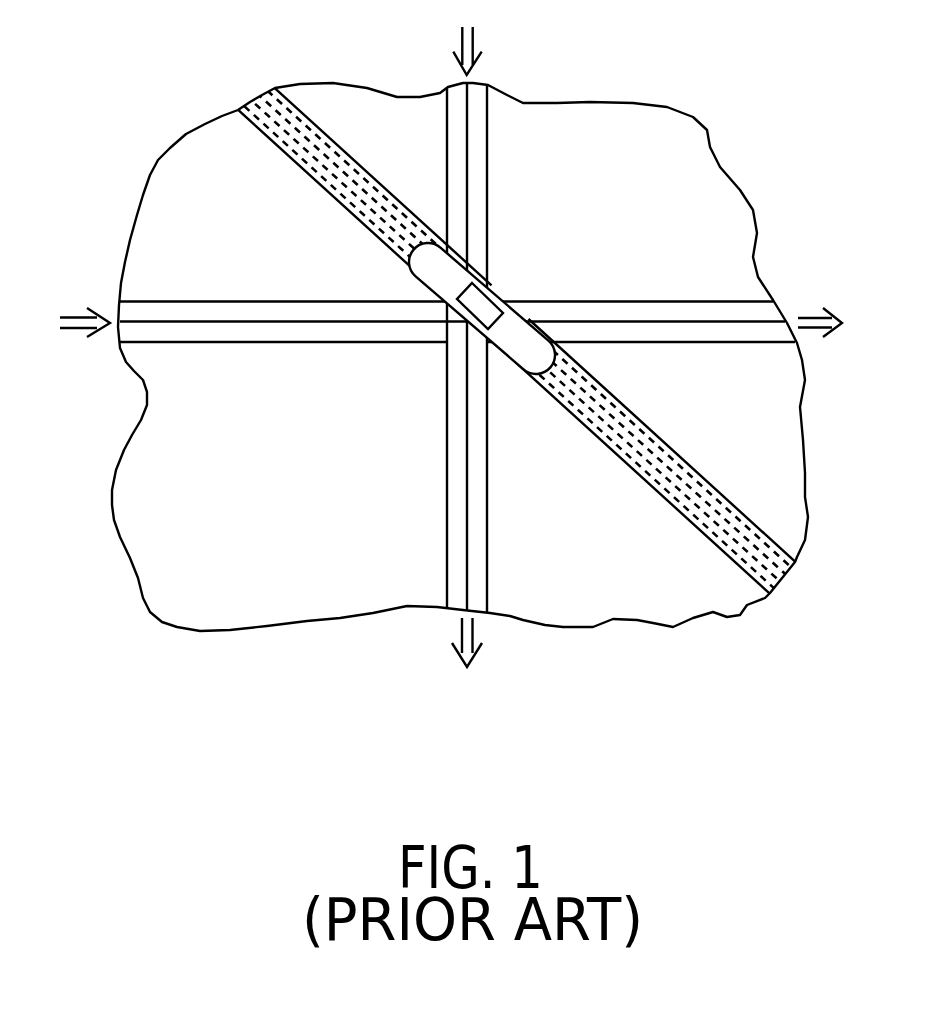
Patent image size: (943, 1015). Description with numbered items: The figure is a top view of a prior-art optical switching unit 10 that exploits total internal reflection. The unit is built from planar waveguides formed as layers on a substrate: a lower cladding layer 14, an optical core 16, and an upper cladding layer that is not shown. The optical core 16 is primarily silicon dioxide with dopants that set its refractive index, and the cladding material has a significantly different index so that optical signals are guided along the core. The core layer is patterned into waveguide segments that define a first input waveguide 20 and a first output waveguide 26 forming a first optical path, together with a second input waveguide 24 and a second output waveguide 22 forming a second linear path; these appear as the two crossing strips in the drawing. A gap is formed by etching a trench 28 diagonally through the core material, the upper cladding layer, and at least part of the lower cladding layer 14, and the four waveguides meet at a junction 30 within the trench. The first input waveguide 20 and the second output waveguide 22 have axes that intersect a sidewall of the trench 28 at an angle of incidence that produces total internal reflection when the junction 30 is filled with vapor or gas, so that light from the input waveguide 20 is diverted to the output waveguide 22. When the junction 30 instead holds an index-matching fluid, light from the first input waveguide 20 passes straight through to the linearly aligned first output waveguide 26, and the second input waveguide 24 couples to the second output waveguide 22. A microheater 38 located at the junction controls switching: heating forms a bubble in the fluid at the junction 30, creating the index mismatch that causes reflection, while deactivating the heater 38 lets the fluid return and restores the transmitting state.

The switching unit 10 is at (113, 178).
The lower cladding layer 14 is at (138, 542).
The optical core 16 is at (175, 341).
The first input waveguide 20 is at (233, 302).
The second output waveguide 22 is at (453, 393).
The second input waveguide 24 is at (478, 169).
The first output waveguide 26 is at (612, 303).
The trench 28 is at (364, 229).
The junction 30 is at (528, 373).
The microheater 38 is at (478, 297).